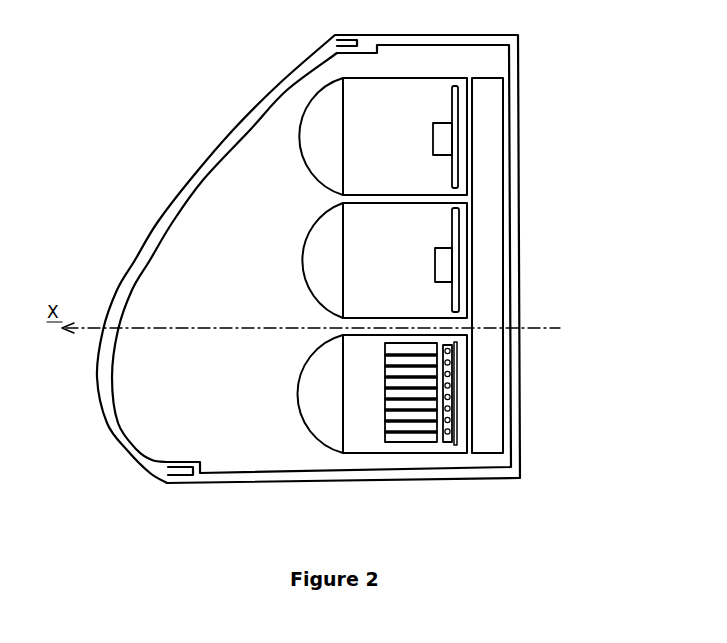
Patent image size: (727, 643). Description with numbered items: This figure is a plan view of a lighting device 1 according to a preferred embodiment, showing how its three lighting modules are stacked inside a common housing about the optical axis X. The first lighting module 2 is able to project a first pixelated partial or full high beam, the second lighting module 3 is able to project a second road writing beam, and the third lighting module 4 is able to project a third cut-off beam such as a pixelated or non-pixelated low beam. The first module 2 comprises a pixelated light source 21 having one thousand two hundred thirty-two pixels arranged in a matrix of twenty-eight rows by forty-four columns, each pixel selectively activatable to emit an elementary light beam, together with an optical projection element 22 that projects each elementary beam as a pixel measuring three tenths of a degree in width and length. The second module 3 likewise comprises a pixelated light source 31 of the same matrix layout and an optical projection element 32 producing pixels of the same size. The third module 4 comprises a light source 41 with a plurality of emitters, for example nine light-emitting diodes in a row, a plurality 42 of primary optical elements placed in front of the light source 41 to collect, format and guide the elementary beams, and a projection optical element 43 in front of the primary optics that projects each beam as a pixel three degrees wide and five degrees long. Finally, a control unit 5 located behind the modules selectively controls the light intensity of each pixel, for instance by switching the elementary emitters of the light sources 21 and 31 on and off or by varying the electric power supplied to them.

The lighting device 1 is at (237, 286).
The first lighting module 2 is at (369, 110).
The second lighting module 3 is at (369, 237).
The third lighting module 4 is at (369, 369).
The control unit 5 is at (492, 309).
The pixelated light source 21 is at (447, 118).
The optical projection element 22 is at (335, 145).
The pixelated light source 31 is at (447, 243).
The optical projection element 32 is at (328, 238).
The light source 41 is at (462, 395).
The plurality of primary optical elements 42 is at (412, 446).
The projection optical element 43 is at (329, 418).